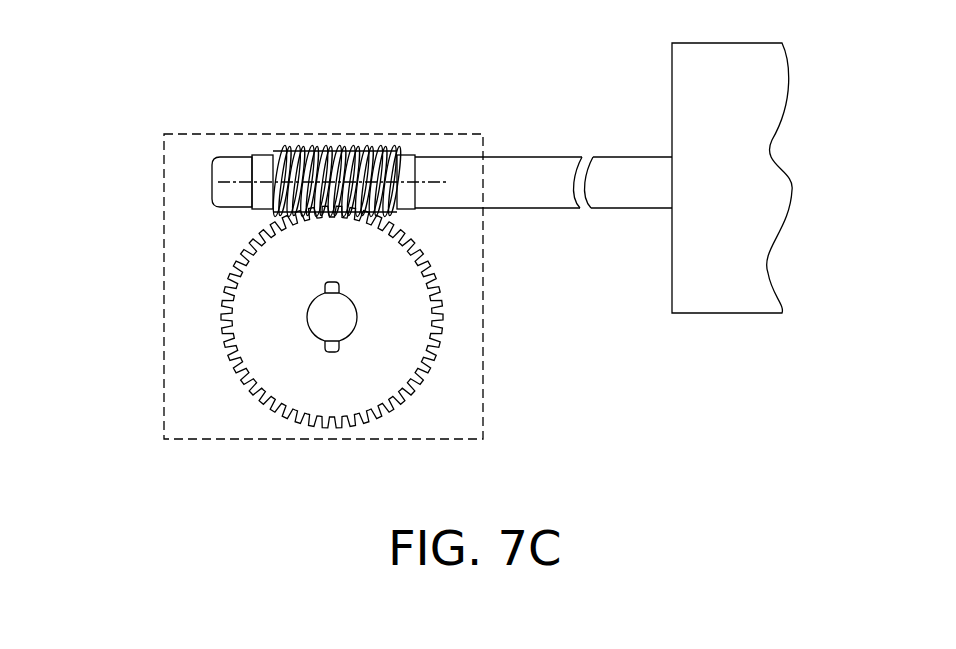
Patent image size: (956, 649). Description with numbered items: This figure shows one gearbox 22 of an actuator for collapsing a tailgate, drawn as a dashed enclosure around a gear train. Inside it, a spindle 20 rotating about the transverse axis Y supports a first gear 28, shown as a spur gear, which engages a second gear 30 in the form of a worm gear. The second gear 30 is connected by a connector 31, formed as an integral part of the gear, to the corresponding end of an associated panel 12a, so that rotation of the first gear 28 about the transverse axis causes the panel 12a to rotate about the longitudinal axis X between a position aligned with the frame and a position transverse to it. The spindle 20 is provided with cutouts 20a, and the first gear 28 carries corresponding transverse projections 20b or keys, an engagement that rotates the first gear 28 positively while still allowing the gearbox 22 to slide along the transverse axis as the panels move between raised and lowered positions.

The panel 12a is at (763, 195).
The spindle 20 is at (347, 317).
The cutouts 20a is at (328, 282).
The transverse projections 20b is at (337, 350).
The gearbox 22 is at (198, 128).
The first gear 28 is at (272, 357).
The second gear 30 is at (328, 132).
The connector 31 is at (436, 167).